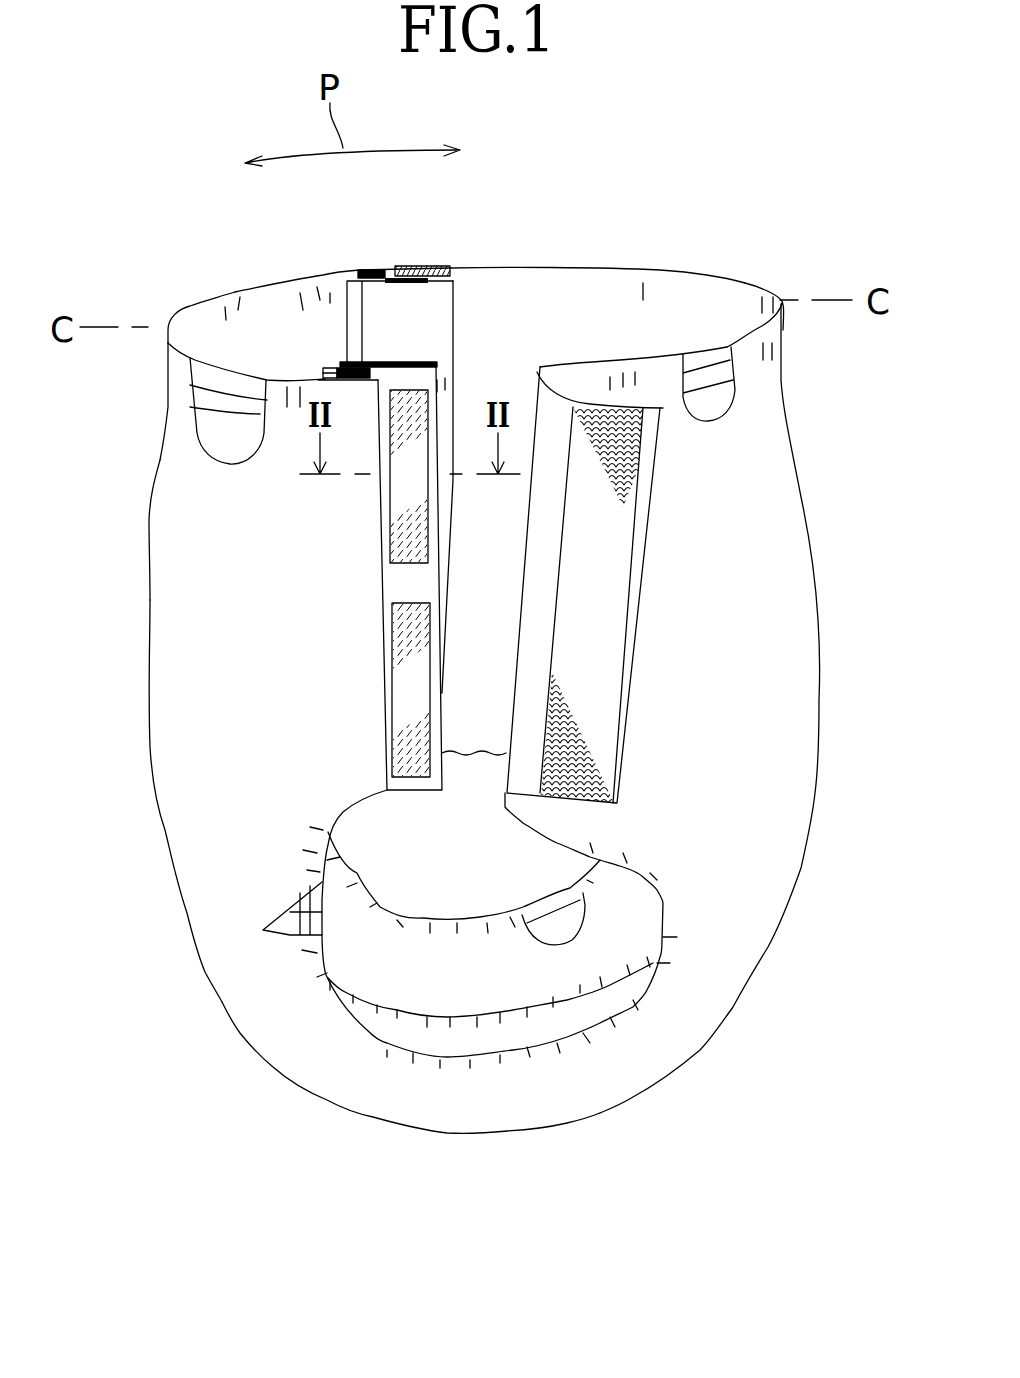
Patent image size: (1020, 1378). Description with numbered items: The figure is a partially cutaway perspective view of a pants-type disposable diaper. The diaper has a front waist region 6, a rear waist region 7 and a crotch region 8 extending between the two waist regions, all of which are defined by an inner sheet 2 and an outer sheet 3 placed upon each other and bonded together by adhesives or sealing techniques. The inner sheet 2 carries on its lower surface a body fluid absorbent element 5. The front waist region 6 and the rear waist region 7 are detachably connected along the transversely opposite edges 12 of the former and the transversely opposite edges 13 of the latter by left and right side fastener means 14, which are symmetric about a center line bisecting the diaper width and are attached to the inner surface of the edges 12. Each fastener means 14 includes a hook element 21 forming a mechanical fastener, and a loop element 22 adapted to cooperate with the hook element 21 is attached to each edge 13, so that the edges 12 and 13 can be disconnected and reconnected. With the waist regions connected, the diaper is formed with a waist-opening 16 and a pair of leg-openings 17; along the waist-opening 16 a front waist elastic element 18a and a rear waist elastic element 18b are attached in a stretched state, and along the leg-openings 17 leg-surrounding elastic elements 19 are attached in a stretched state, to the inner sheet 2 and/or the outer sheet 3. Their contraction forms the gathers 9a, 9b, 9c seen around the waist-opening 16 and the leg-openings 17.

The inner sheet 2 is at (217, 433).
The outer sheet 3 is at (177, 497).
The body fluid absorbent element 5 is at (437, 1017).
The front waist region 6 is at (173, 750).
The rear waist region 7 is at (792, 670).
The crotch region 8 is at (460, 1110).
The gathers 9a is at (210, 310).
The gathers 9b is at (776, 307).
The gathers 9c is at (417, 917).
The transversely opposite edges of the front waist region 12 is at (317, 290).
The transversely opposite edges of the rear waist region 13 is at (482, 287).
The fastener means 14 is at (324, 347).
The waist-opening 16 is at (655, 288).
The leg-openings 17 is at (380, 823).
The front waist elastic element 18a is at (197, 393).
The rear waist elastic element 18b is at (713, 380).
The leg-surrounding elastic elements 19 is at (263, 931).
The hook element 21 is at (410, 497).
The loop element 22 is at (600, 598).